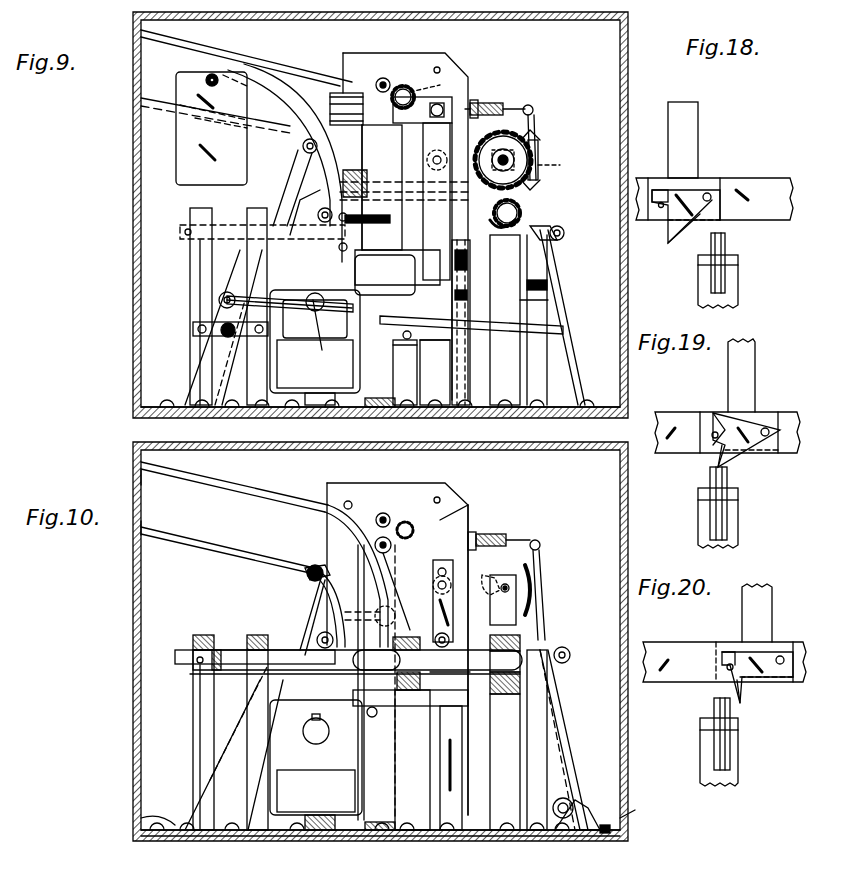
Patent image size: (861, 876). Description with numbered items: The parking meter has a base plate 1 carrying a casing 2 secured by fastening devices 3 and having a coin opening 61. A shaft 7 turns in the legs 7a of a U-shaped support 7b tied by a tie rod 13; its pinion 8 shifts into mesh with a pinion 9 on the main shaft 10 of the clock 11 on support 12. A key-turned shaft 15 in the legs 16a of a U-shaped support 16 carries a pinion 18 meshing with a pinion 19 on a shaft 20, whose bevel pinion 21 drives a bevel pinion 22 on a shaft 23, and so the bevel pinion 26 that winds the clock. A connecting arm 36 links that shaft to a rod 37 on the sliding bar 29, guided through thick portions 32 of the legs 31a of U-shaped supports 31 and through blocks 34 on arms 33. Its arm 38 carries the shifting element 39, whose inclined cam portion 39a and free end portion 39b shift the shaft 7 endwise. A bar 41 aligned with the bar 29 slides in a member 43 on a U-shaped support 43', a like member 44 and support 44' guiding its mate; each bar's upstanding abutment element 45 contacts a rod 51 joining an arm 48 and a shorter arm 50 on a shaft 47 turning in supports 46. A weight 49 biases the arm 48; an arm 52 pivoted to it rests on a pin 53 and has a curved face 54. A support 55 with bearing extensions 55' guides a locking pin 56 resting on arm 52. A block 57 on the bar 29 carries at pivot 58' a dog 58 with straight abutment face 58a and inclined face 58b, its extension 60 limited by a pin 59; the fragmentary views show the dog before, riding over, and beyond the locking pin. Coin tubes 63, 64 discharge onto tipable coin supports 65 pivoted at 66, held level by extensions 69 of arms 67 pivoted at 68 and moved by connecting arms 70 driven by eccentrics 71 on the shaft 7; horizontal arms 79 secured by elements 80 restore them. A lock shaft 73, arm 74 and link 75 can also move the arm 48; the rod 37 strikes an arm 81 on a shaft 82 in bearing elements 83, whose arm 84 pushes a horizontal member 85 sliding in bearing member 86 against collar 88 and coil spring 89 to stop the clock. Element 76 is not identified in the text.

In FIG. 9, the base plate 1 is at (134, 415).
In FIG. 10, the base plate 1 is at (134, 830).
In FIG. 9, the casing 2 is at (133, 292).
In FIG. 10, the casing 2 is at (133, 636).
In FIG. 10, the fastening devices 3 is at (135, 819).
In FIG. 9, the shaft 7 is at (368, 124).
In FIG. 10, the shaft 7 is at (376, 546).
In FIG. 9, the upstanding legs 7a is at (385, 60).
In FIG. 10, the upstanding legs 7a is at (375, 502).
In FIG. 9, the U-shaped support 7b is at (370, 417).
In FIG. 10, the U-shaped support 7b is at (372, 852).
In FIG. 9, the pinion 8 is at (440, 104).
In FIG. 9, the pinion 9 is at (405, 90).
In FIG. 10, the pinion 9 is at (470, 522).
In FIG. 9, the main shaft 10 is at (418, 95).
In FIG. 10, the main shaft 10 is at (410, 526).
In FIG. 9, the clock 11 is at (462, 80).
In FIG. 10, the clock 11 is at (470, 507).
In FIG. 9, the support 12 is at (185, 400).
In FIG. 10, the support 12 is at (580, 814).
In FIG. 9, the tie rod 13 is at (385, 78).
In FIG. 10, the tie rod 13 is at (388, 514).
In FIG. 9, the shaft 15 is at (528, 215).
In FIG. 9, the U-shaped support 16 is at (502, 410).
In FIG. 10, the U-shaped support 16 is at (359, 826).
In FIG. 9, the upstanding legs 16a is at (505, 367).
In FIG. 9, the pinion 18 is at (520, 205).
In FIG. 9, the pinion 19 is at (532, 150).
In FIG. 9, the shaft 20 is at (520, 158).
In FIG. 10, the shaft 20 is at (510, 594).
In FIG. 9, the bevel pinion 21 is at (533, 140).
In FIG. 10, the bevel pinion 21 is at (520, 572).
In FIG. 9, the bevel pinion 22 is at (540, 165).
In FIG. 10, the bevel pinion 22 is at (545, 600).
In FIG. 9, the shaft 23 is at (564, 160).
In FIG. 10, the shaft 23 is at (480, 590).
In FIG. 9, the bevel pinion 26 is at (424, 156).
In FIG. 10, the bevel pinion 26 is at (431, 587).
In FIG. 10, the bar 29 is at (520, 682).
In FIG. 18, the bar 29 is at (785, 178).
In FIG. 19, the bar 29 is at (790, 412).
In FIG. 20, the bar 29 is at (680, 652).
In FIG. 9, the U-shaped supports 31 is at (395, 387).
In FIG. 10, the U-shaped supports 31 is at (420, 830).
In FIG. 10, the upstanding legs 31a is at (415, 777).
In FIG. 10, the thick portions 32 is at (370, 606).
In FIG. 10, the arms 33 is at (528, 634).
In FIG. 10, the blocks 34 is at (510, 714).
In FIG. 9, the connecting arm 36 is at (566, 237).
In FIG. 9, the rod 37 is at (564, 317).
In FIG. 10, the rod 37 is at (570, 654).
In FIG. 9, the arm 38 is at (395, 185).
In FIG. 18, the arm 38 is at (690, 120).
In FIG. 19, the arm 38 is at (750, 350).
In FIG. 20, the arm 38 is at (762, 592).
In FIG. 9, the shifting element 39 is at (340, 93).
In FIG. 9, the inclined intermediate cam portion 39a is at (330, 118).
In FIG. 9, the free end portion 39b is at (337, 93).
In FIG. 9, the bar 41 is at (185, 238).
In FIG. 10, the bar 41 is at (228, 650).
In FIG. 9, the member 43 is at (185, 299).
In FIG. 10, the member 43 is at (204, 717).
In FIG. 9, the U-shaped support 43' is at (177, 322).
In FIG. 10, the U-shaped support 43' is at (180, 747).
In FIG. 9, the member 44 is at (245, 296).
In FIG. 10, the member 44 is at (261, 711).
In FIG. 9, the U-shaped support 44' is at (304, 342).
In FIG. 10, the U-shaped support 44' is at (312, 757).
In FIG. 10, the upstanding abutment element 45 is at (453, 639).
In FIG. 9, the upstanding supports 46 is at (300, 170).
In FIG. 10, the upstanding supports 46 is at (235, 788).
In FIG. 9, the shaft 47 is at (303, 147).
In FIG. 10, the shaft 47 is at (318, 565).
In FIG. 9, the arm 48 is at (342, 220).
In FIG. 9, the weight 49 is at (180, 171).
In FIG. 10, the shorter arm 50 is at (312, 592).
In FIG. 9, the rod 51 is at (318, 215).
In FIG. 9, the arm 52 is at (392, 372).
In FIG. 9, the pin 53 is at (435, 353).
In FIG. 9, the curved face 54 is at (411, 342).
In FIG. 9, the support 55 is at (435, 372).
In FIG. 18, the support 55 is at (736, 286).
In FIG. 19, the support 55 is at (739, 527).
In FIG. 20, the support 55 is at (719, 781).
In FIG. 9, the bearing extensions 55' is at (484, 322).
In FIG. 18, the bearing extensions 55' is at (739, 259).
In FIG. 19, the bearing extensions 55' is at (736, 508).
In FIG. 20, the bearing extensions 55' is at (698, 744).
In FIG. 9, the locking pin 56 is at (460, 294).
In FIG. 18, the locking pin 56 is at (728, 242).
In FIG. 19, the locking pin 56 is at (730, 532).
In FIG. 20, the locking pin 56 is at (728, 782).
In FIG. 18, the block 57 is at (728, 194).
In FIG. 19, the block 57 is at (768, 412).
In FIG. 20, the block 57 is at (724, 650).
In FIG. 18, the dog 58 is at (688, 182).
In FIG. 19, the dog 58 is at (751, 406).
In FIG. 20, the dog 58 is at (760, 662).
In FIG. 18, the pivot 58' is at (724, 172).
In FIG. 19, the pivot 58' is at (779, 452).
In FIG. 20, the pivot 58' is at (780, 660).
In FIG. 18, the straight abutment face 58a is at (668, 243).
In FIG. 19, the straight abutment face 58a is at (715, 464).
In FIG. 20, the straight abutment face 58a is at (738, 690).
In FIG. 18, the inclined face 58b is at (720, 214).
In FIG. 19, the inclined face 58b is at (742, 460).
In FIG. 20, the inclined face 58b is at (752, 697).
In FIG. 18, the pin 59 is at (660, 210).
In FIG. 19, the pin 59 is at (710, 437).
In FIG. 20, the pin 59 is at (728, 674).
In FIG. 18, the extension 60 is at (660, 190).
In FIG. 19, the extension 60 is at (722, 414).
In FIG. 20, the extension 60 is at (722, 662).
In FIG. 10, the coin opening 61 is at (134, 518).
In FIG. 9, the coin tube 63 is at (141, 86).
In FIG. 10, the coin tube 63 is at (265, 514).
In FIG. 9, the coin tube 64 is at (270, 56).
In FIG. 9, the tipable coin support 65 is at (345, 270).
In FIG. 10, the tipable coin support 65 is at (355, 707).
In FIG. 9, the pivot 66 is at (392, 260).
In FIG. 10, the pivot 66 is at (408, 714).
In FIG. 10, the vertical arm 67 is at (440, 606).
In FIG. 9, the pivot 68 is at (367, 207).
In FIG. 10, the pivot 68 is at (436, 636).
In FIG. 9, the laterally projected extension 69 is at (364, 230).
In FIG. 10, the laterally projected extension 69 is at (478, 707).
In FIG. 9, the connecting arm 70 is at (397, 152).
In FIG. 10, the connecting arm 70 is at (392, 570).
In FIG. 10, the eccentric 71 is at (392, 552).
In FIG. 9, the rotatable shaft 73 is at (243, 367).
In FIG. 9, the arm 74 is at (220, 316).
In FIG. 9, the link 75 is at (320, 342).
In FIG. 9, the housing 76 is at (297, 354).
In FIG. 10, the housing 76 is at (322, 832).
In FIG. 9, the horizontal arms 79 is at (548, 302).
In FIG. 10, the horizontal arms 79 is at (450, 722).
In FIG. 9, the elements 80 is at (540, 280).
In FIG. 10, the elements 80 is at (548, 665).
In FIG. 10, the upstanding arm 81 is at (565, 724).
In FIG. 10, the shaft 82 is at (556, 832).
In FIG. 10, the bearing elements 83 is at (630, 817).
In FIG. 9, the upstanding arm 84 is at (540, 118).
In FIG. 10, the upstanding arm 84 is at (545, 562).
In FIG. 9, the horizontal member 85 is at (530, 105).
In FIG. 10, the horizontal member 85 is at (540, 544).
In FIG. 9, the bearing member 86 is at (479, 94).
In FIG. 10, the bearing member 86 is at (466, 543).
In FIG. 9, the collar 88 is at (490, 103).
In FIG. 10, the collar 88 is at (515, 536).
In FIG. 9, the expansible coil spring 89 is at (480, 100).
In FIG. 10, the expansible coil spring 89 is at (488, 532).